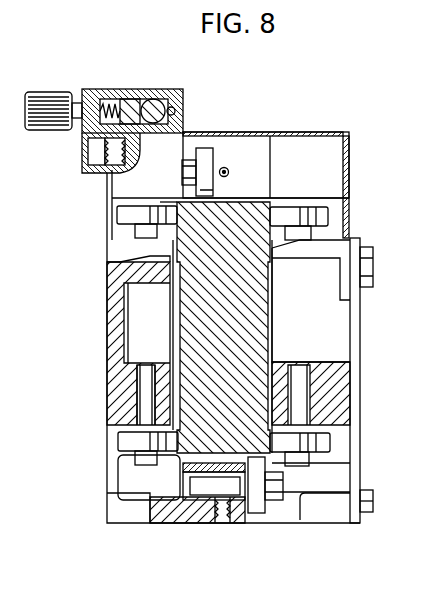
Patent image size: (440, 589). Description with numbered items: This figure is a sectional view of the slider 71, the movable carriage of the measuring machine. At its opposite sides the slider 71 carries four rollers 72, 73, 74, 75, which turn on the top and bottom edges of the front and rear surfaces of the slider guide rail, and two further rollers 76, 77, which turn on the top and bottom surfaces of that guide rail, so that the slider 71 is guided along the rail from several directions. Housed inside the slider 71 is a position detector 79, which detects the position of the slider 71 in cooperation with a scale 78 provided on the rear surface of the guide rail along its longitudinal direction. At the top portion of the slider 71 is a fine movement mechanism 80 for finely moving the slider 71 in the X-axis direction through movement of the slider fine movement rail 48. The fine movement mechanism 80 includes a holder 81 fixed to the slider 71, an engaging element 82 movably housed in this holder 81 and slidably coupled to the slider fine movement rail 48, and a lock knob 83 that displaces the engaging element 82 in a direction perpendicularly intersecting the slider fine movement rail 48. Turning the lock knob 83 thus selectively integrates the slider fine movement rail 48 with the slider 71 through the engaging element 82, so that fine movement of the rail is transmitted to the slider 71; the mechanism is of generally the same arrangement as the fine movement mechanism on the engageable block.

The slider fine movement rail 48 is at (152, 99).
The slider 71 is at (340, 166).
The roller 72 is at (120, 214).
The roller 73 is at (120, 440).
The roller 74 is at (330, 218).
The roller 75 is at (332, 446).
The roller 76 is at (206, 146).
The roller 77 is at (272, 512).
The scale 78 is at (273, 327).
The position detector 79 is at (340, 344).
The fine movement mechanism 80 is at (69, 47).
The holder 81 is at (100, 100).
The engaging element 82 is at (133, 95).
The lock knob 83 is at (60, 102).